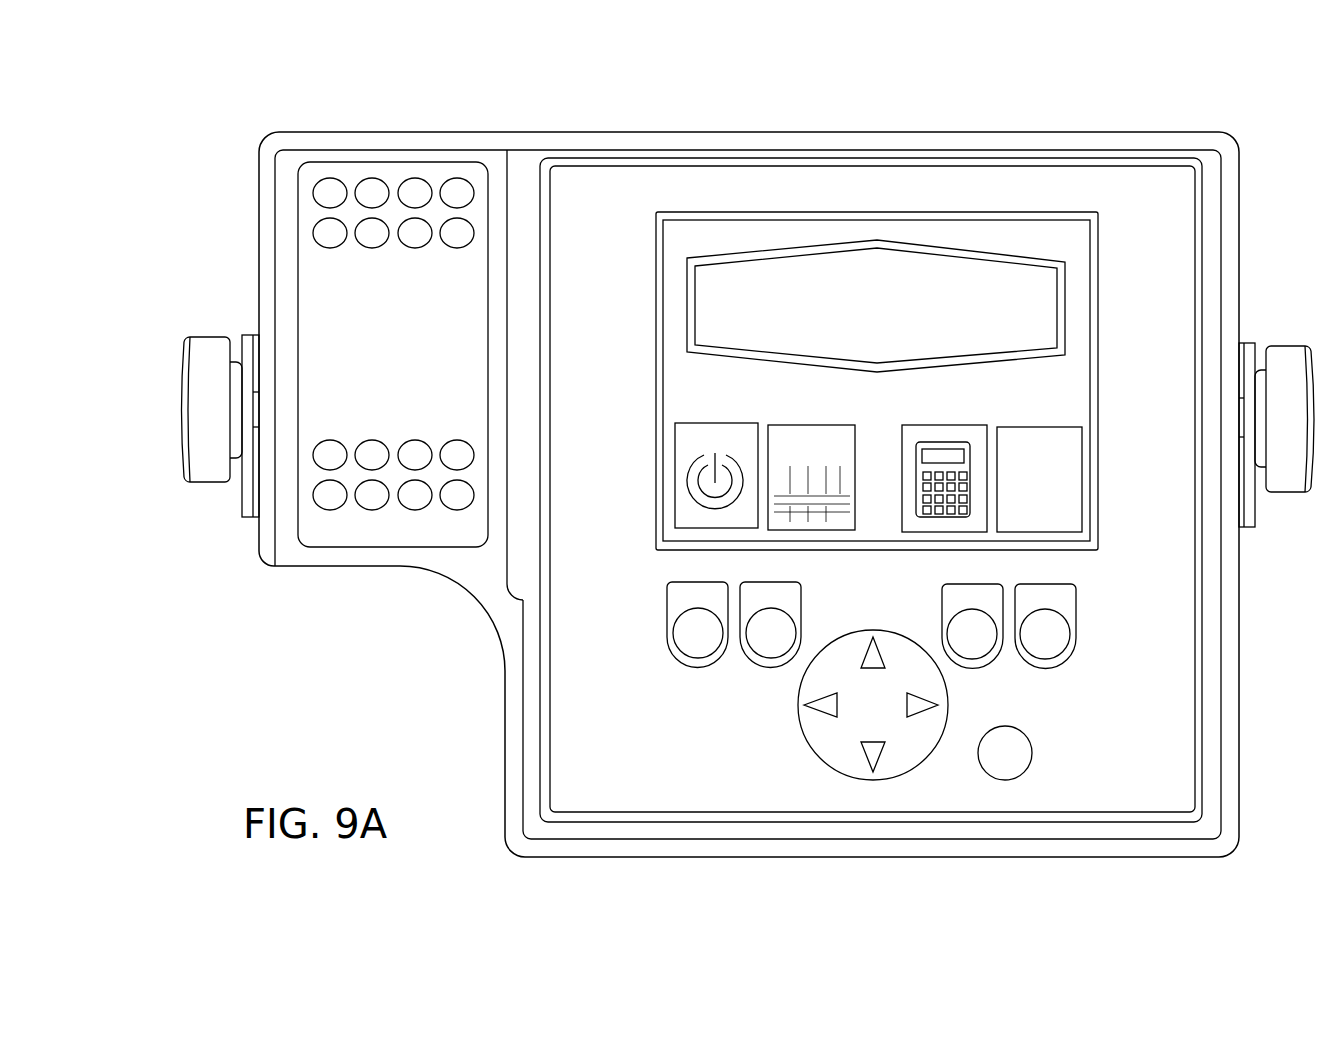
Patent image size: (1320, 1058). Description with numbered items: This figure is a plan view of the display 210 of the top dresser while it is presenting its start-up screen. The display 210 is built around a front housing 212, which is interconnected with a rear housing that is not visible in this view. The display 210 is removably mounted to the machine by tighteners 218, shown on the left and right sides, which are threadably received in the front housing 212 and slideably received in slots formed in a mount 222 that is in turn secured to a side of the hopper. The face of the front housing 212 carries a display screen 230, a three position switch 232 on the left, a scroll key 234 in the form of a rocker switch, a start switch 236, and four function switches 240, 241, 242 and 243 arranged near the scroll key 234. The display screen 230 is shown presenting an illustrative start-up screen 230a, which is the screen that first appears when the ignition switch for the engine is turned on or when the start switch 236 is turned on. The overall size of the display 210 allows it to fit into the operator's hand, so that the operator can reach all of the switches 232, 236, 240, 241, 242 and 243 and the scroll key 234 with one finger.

The display 210 is at (243, 101).
The front housing 212 is at (267, 199).
The tighteners 218 is at (202, 406).
The mount 222 is at (244, 510).
The display screen 230 is at (817, 167).
The start-up screen 230a is at (1125, 207).
The three position switch 232 is at (393, 173).
The scroll key 234 is at (846, 763).
The start switch 236 is at (1004, 773).
The function switch 240 is at (696, 645).
The function switch 241 is at (769, 645).
The function switch 242 is at (970, 650).
The function switch 243 is at (1043, 650).